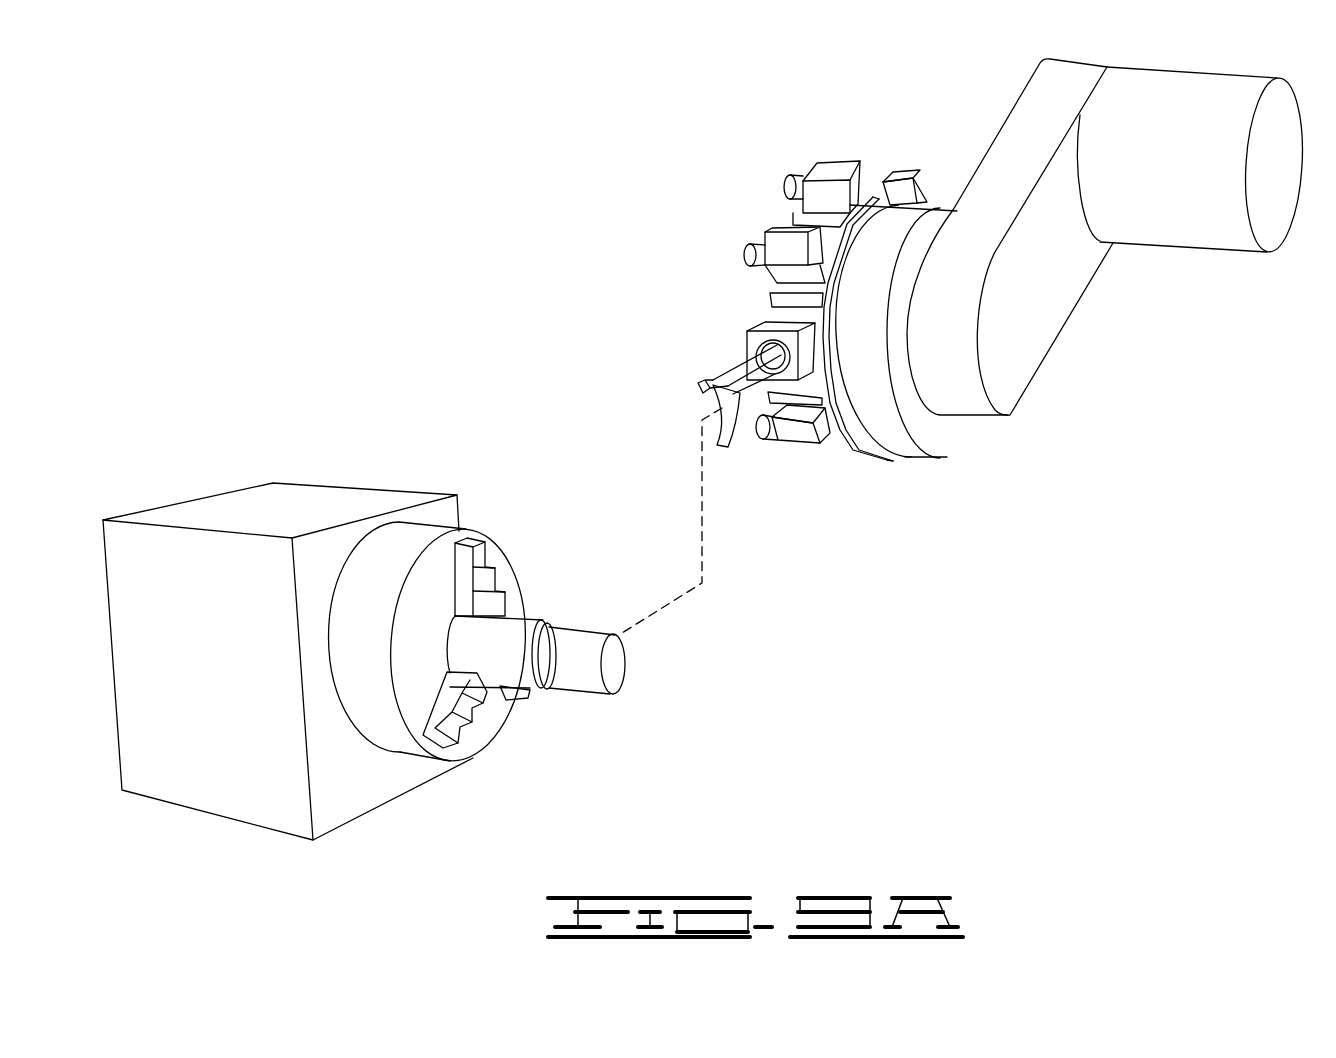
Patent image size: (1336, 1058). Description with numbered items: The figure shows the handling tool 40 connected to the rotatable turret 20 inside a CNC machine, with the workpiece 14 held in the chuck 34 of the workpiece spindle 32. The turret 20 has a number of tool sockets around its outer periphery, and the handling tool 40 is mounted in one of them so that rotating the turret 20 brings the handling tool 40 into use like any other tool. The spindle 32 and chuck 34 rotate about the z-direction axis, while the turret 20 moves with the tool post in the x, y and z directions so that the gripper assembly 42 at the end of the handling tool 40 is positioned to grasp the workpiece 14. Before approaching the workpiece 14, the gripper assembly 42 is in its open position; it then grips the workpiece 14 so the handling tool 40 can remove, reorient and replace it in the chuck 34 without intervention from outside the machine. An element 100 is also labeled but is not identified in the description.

The workpiece 14 is at (613, 670).
The rotatable turret 20 is at (793, 218).
The workpiece spindle 32 is at (483, 733).
The workpiece holder 34 is at (483, 556).
The handling tool 40 is at (733, 372).
The gripper assembly 42 is at (738, 452).
The tool holder block 100 is at (757, 325).